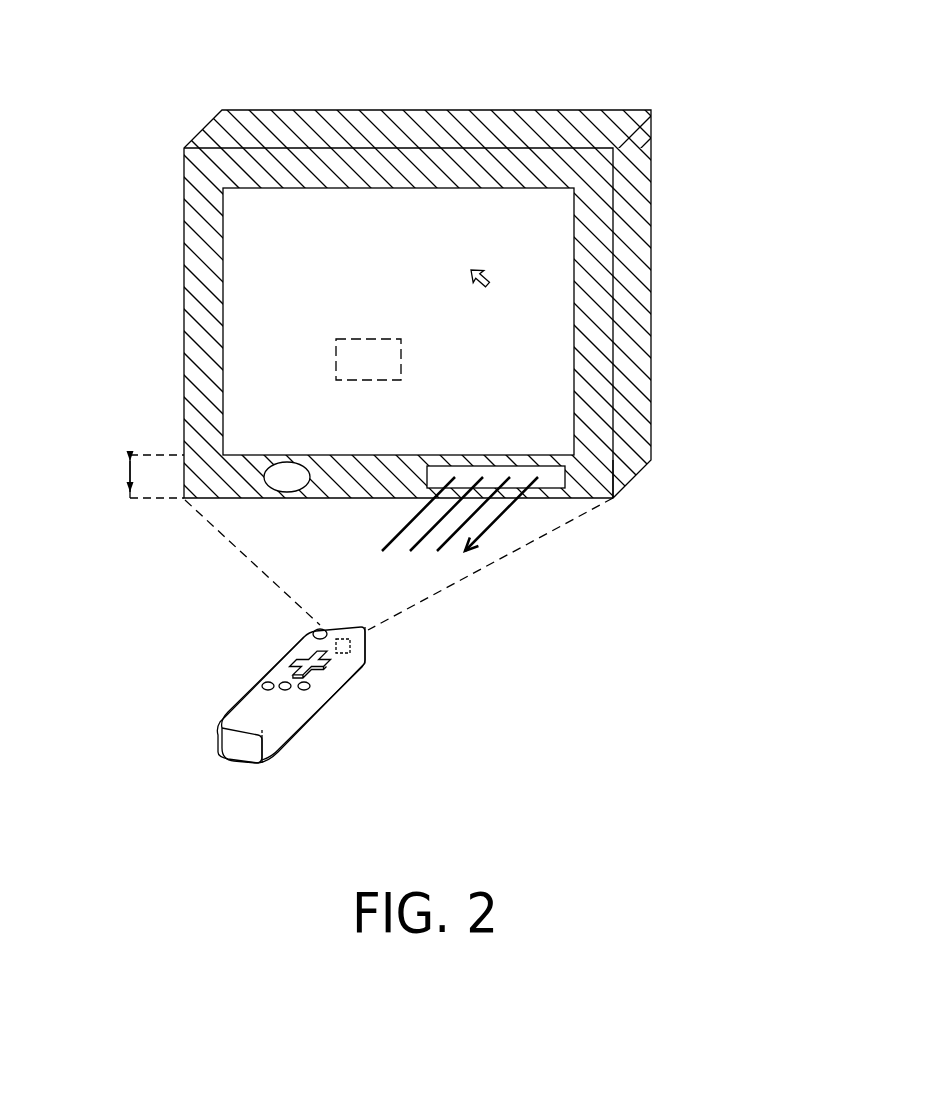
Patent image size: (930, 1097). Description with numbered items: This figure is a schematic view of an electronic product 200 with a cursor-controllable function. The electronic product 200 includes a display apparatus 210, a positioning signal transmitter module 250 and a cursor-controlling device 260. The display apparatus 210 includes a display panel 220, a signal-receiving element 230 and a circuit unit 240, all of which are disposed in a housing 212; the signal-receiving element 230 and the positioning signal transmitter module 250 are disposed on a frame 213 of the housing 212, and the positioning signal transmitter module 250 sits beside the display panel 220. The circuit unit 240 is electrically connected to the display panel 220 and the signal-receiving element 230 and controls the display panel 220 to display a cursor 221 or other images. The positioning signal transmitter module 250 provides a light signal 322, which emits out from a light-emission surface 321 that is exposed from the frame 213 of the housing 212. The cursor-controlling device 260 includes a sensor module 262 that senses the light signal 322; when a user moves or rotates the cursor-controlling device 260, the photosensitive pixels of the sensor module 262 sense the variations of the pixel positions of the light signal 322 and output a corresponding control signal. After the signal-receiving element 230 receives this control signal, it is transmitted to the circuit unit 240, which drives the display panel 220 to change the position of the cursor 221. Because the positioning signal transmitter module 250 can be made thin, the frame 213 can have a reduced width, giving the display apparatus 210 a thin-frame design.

The electronic product 200 is at (465, 384).
The display apparatus 210 is at (465, 278).
The housing 212 is at (574, 149).
The frame 213 is at (592, 441).
The display panel 220 is at (478, 207).
The cursor 221 is at (495, 274).
The signal-receiving element 230 is at (283, 467).
The circuit unit 240 is at (380, 339).
The positioning signal transmitter module 250 is at (557, 479).
The light-emission surface 321 is at (594, 508).
The light signal 322 is at (487, 532).
The cursor-controlling device 260 is at (332, 694).
The sensor module 262 is at (352, 650).